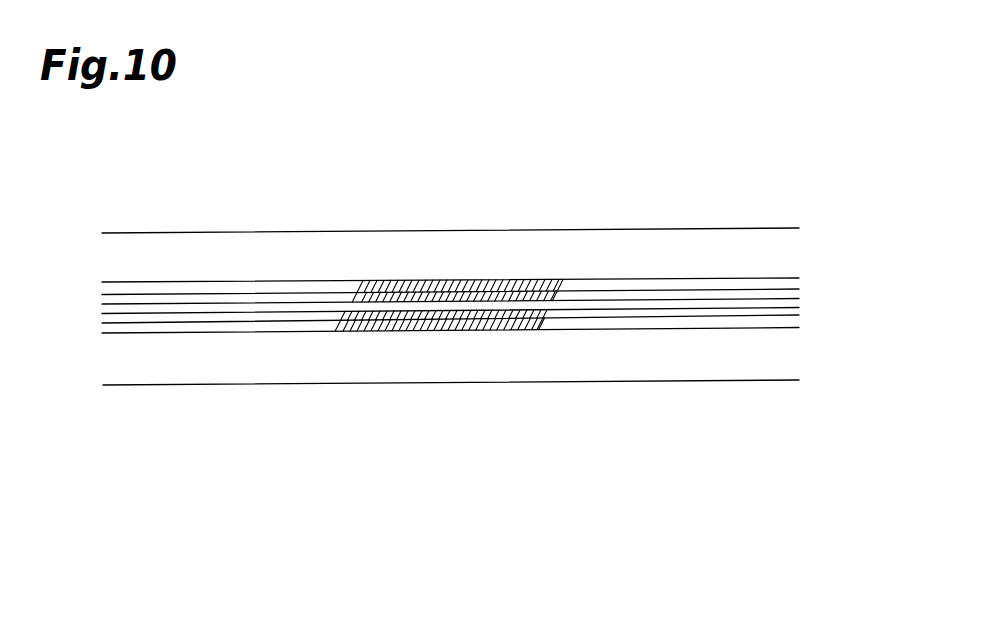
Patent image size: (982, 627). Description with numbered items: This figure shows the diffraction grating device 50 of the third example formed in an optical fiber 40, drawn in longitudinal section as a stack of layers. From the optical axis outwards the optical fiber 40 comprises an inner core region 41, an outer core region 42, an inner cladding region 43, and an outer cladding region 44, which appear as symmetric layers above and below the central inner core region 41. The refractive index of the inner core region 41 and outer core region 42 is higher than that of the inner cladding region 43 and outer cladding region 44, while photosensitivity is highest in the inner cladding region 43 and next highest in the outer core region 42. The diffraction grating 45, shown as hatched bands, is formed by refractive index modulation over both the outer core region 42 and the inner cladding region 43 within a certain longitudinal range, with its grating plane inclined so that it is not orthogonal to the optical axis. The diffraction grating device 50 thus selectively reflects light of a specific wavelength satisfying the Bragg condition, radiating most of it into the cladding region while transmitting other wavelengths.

The diffraction grating device 50 is at (681, 197).
The optical fiber 40 is at (872, 217).
The outer cladding region 44 is at (790, 248).
The inner cladding region 43 is at (792, 282).
The outer core region 42 is at (792, 292).
The inner core region 41 is at (792, 303).
The diffraction grating 45 is at (452, 333).